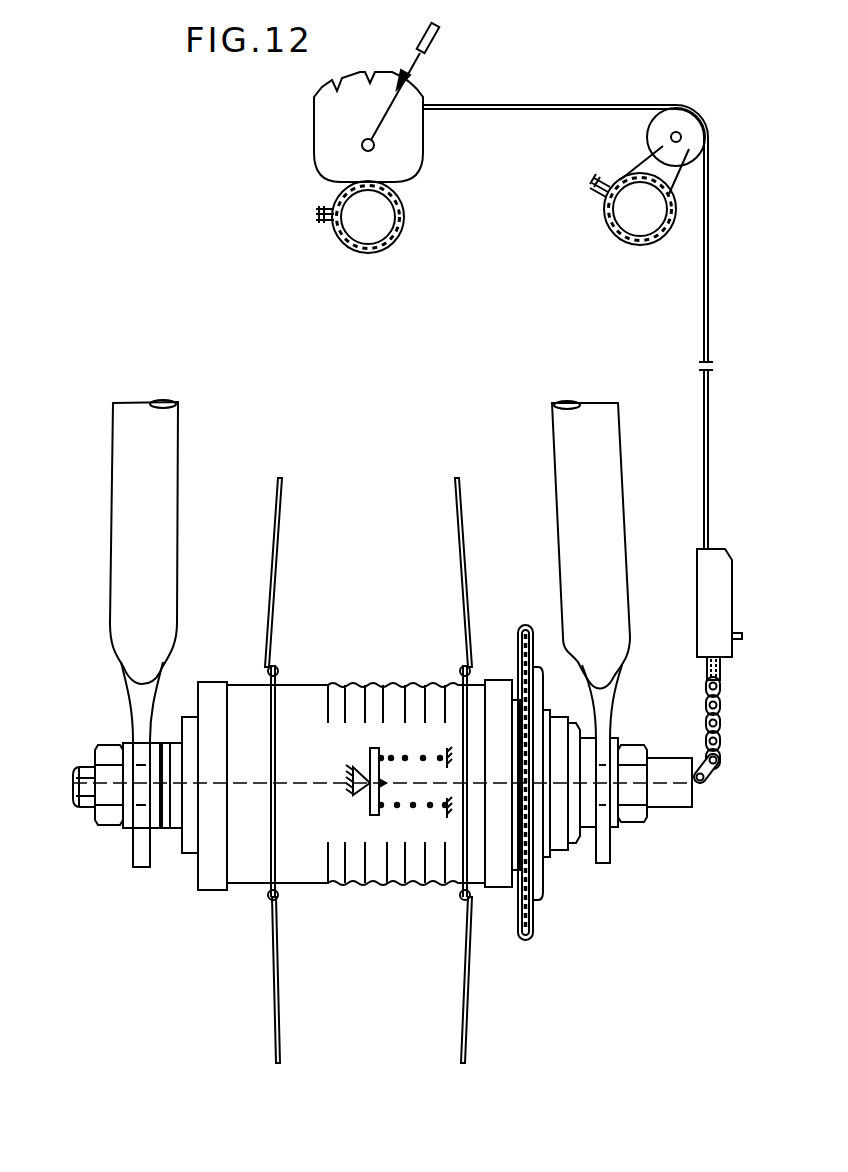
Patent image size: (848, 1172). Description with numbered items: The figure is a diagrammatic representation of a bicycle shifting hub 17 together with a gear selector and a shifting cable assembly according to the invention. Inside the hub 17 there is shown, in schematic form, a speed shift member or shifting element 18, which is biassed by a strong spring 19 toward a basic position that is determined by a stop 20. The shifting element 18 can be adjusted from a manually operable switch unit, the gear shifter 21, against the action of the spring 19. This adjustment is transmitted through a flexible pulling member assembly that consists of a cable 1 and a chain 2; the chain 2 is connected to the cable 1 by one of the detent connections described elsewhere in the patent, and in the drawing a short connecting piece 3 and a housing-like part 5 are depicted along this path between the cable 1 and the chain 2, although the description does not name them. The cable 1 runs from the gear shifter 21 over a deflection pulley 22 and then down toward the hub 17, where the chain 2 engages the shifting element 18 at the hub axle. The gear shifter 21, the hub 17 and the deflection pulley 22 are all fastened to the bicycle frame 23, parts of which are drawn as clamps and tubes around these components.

The cable 1 is at (705, 378).
The chain 2 is at (707, 722).
The connecting member 3 is at (710, 661).
The cable adjusting housing 5 is at (708, 592).
The bicycle shifting hub 17 is at (380, 867).
The shifting element 18 is at (370, 756).
The spring 19 is at (404, 756).
The stop 20 is at (357, 793).
The gear shifter 21 is at (406, 161).
The deflection pulley 22 is at (676, 120).
The bicycle frame 23 is at (399, 237).